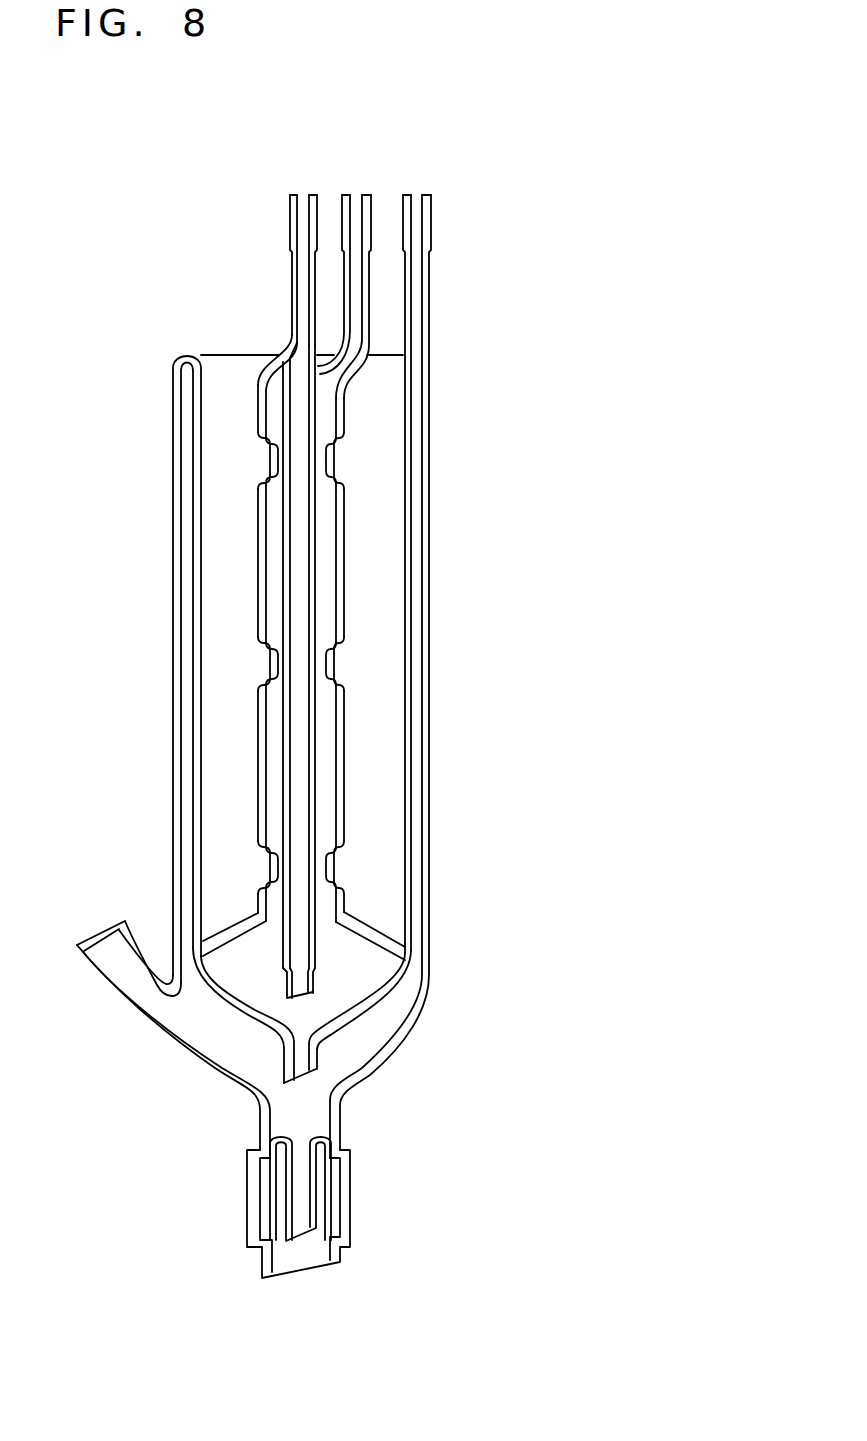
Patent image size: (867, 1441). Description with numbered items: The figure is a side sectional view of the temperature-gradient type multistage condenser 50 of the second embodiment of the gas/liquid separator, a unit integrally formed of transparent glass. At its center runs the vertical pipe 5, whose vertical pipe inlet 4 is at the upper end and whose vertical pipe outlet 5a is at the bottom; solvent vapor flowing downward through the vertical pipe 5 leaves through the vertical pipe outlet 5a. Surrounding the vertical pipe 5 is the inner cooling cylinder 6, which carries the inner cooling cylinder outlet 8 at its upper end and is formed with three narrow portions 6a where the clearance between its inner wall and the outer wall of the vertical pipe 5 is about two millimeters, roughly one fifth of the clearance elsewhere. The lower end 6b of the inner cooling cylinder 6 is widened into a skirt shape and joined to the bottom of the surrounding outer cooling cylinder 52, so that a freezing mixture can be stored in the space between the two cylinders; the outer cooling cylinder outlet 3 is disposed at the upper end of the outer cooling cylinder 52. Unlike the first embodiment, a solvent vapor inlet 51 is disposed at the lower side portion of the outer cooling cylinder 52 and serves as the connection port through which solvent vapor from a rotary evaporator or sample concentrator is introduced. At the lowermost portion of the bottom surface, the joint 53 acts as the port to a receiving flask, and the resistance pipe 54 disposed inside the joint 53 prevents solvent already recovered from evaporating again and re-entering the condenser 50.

The outer cooling cylinder outlet 3 is at (432, 220).
The vertical pipe inlet 4 is at (313, 195).
The inner cooling cylinder outlet 8 is at (366, 197).
The vertical pipe 5 is at (318, 616).
The vertical pipe outlet 5a is at (310, 988).
The inner cooling cylinder 6 is at (341, 492).
The narrow portions 6a is at (267, 463).
The lower end of the inner cooling cylinder 6b is at (360, 933).
The temperature-gradient type multistage condenser 50 is at (473, 530).
The solvent vapor inlet 51 is at (83, 951).
The outer cooling cylinder 52 is at (431, 660).
The joint 53 is at (348, 1222).
The resistance pipe 54 is at (291, 1178).